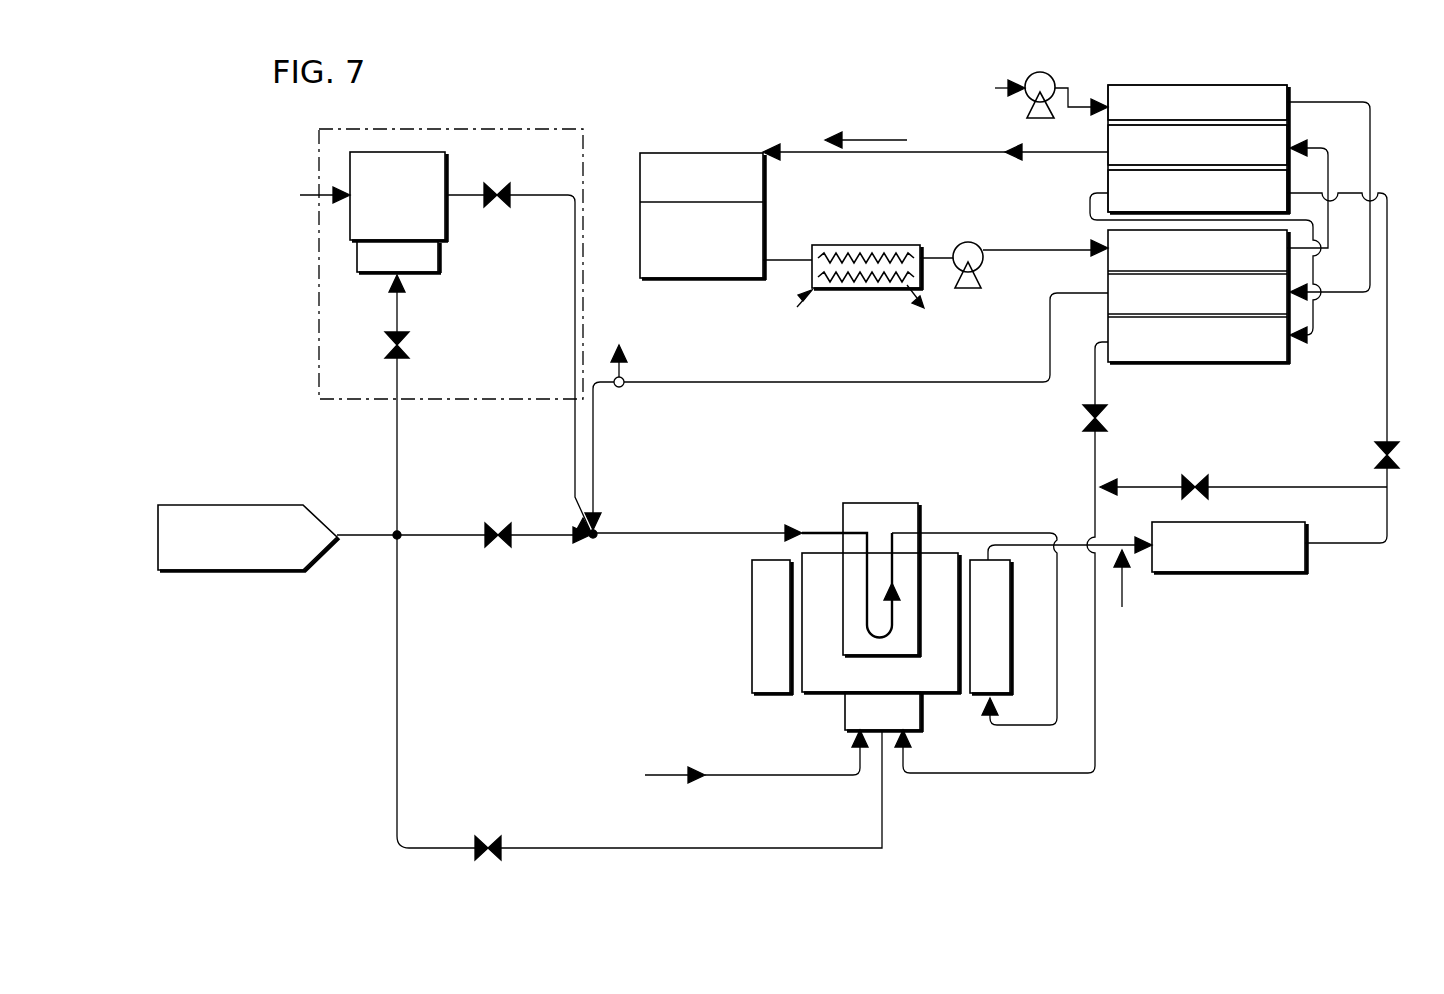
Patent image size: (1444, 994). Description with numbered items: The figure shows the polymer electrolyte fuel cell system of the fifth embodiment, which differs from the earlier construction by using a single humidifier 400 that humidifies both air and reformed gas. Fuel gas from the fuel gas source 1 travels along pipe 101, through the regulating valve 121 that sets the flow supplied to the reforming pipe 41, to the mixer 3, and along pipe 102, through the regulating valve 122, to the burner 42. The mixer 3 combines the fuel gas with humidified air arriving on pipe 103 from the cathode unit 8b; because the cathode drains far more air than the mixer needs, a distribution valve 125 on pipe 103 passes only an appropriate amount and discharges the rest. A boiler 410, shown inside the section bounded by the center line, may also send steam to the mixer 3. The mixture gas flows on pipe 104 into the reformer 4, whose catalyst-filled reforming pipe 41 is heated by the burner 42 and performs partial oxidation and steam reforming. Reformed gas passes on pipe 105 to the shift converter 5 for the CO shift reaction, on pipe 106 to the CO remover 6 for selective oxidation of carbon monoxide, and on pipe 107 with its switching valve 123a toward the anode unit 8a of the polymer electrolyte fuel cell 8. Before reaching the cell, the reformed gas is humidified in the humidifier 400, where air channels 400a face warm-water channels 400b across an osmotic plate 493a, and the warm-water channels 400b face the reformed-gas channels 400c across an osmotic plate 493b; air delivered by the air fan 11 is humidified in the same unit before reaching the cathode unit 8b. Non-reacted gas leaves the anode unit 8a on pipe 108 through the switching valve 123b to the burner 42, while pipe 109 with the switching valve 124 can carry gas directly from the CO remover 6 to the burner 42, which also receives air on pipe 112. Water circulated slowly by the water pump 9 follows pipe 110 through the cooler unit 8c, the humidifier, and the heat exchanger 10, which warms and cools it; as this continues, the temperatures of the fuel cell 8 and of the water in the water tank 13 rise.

The fuel gas source 1 is at (245, 505).
The mixer 3 is at (597, 542).
The reformer 4 is at (886, 485).
The shift converter 5 is at (780, 697).
The CO remover 6 is at (1302, 566).
The polymer electrolyte fuel cell 8 is at (1213, 327).
The anode unit 8a is at (1290, 348).
The cathode unit 8b is at (1293, 277).
The cooler unit 8c is at (1115, 236).
The water pump 9 is at (965, 290).
The heat exchanger 10 is at (872, 245).
The air fan 11 is at (1028, 105).
The water tank 13 is at (717, 280).
The reforming pipe 41 is at (905, 508).
The burner 42 is at (918, 735).
The pipe 101 is at (435, 535).
The pipe 102 is at (640, 852).
The pipe 103 is at (723, 385).
The pipe 104 is at (712, 530).
The pipe 105 is at (997, 525).
The pipe 106 is at (1068, 543).
The pipe 107 is at (1392, 473).
The pipe 108 is at (1100, 685).
The pipe 109 is at (1125, 483).
The pipe 110 is at (1010, 148).
The pipe 112 is at (778, 778).
The regulating valve 121 is at (493, 525).
The regulating valve 122 is at (483, 855).
The switching valve 123a is at (1376, 453).
The switching valve 123b is at (1082, 414).
The switching valve 124 is at (1190, 478).
The distribution valve 125 is at (625, 374).
The humidifier 400 is at (1218, 133).
The air channels 400a is at (1115, 86).
The warm-water channels 400b is at (1290, 138).
The reformed-gas channels 400c is at (1290, 178).
The boiler 410 is at (421, 148).
The osmotic plate 493a is at (1108, 123).
The osmotic plate 493b is at (1108, 168).